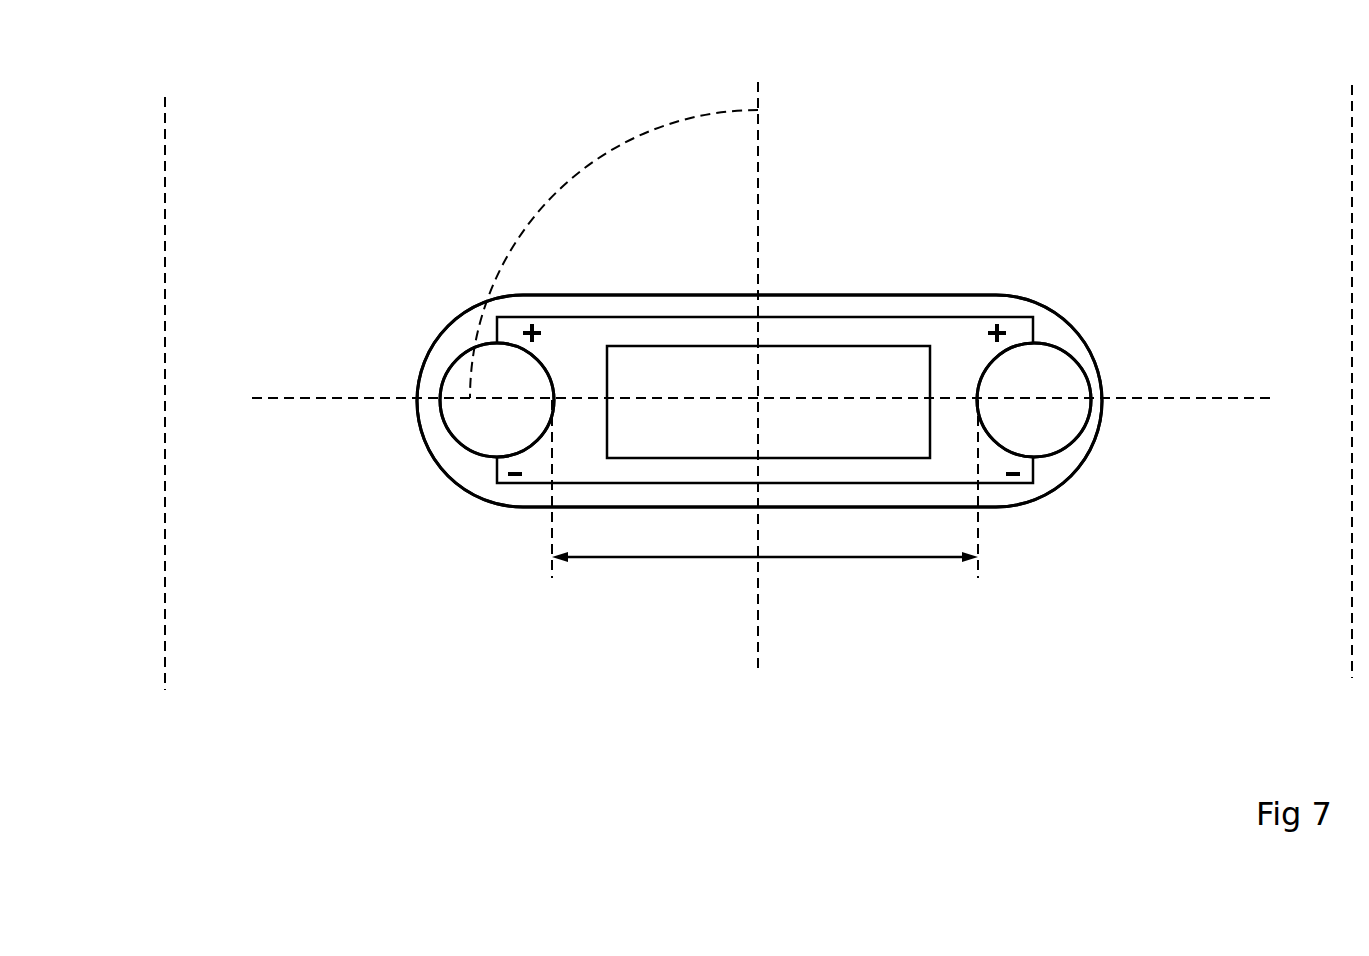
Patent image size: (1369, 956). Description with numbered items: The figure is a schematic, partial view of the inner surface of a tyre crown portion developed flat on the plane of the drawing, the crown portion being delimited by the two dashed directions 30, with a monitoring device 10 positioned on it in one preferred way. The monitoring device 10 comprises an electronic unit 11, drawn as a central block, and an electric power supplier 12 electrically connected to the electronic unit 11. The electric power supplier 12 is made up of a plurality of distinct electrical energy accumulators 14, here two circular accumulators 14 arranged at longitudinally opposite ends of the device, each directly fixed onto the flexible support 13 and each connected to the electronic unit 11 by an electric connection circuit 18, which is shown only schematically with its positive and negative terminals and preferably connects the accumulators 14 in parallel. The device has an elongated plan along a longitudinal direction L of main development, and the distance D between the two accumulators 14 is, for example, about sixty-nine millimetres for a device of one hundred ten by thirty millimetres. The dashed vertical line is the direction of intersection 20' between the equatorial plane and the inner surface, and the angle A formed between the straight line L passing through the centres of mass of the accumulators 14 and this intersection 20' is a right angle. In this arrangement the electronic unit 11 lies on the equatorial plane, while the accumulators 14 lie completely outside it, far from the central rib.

The monitoring device 10 is at (400, 226).
The electronic unit 11 is at (750, 444).
The electric power supplier 12 is at (436, 440).
The flexible support 13 is at (523, 495).
The electrical energy accumulator 14 is at (477, 444).
The electric connection circuit 18 is at (850, 300).
The direction of intersection 20' is at (824, 356).
The directions delimiting the crown portion 30 is at (165, 152).
The angle A is at (630, 157).
The longitudinal direction L is at (1160, 398).
The distance between the two accumulators D is at (765, 500).